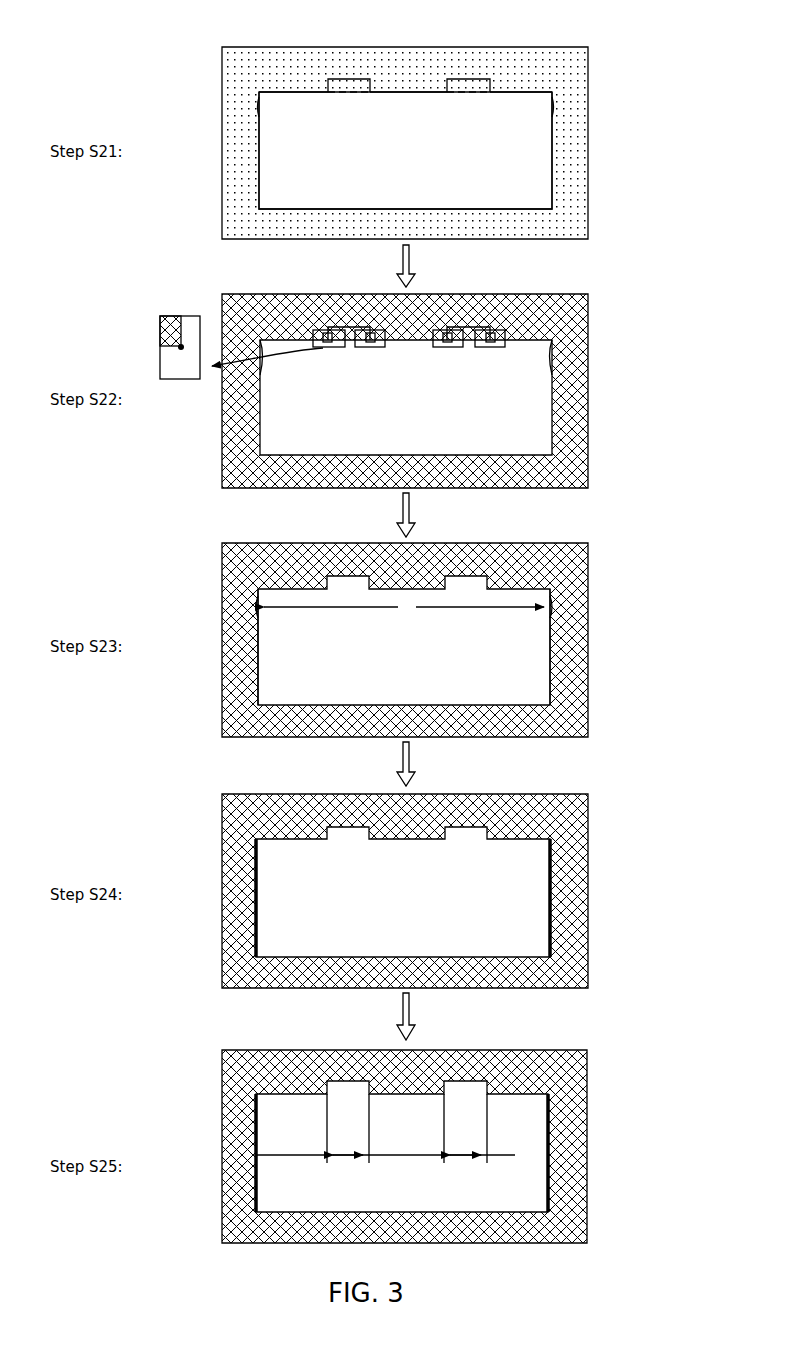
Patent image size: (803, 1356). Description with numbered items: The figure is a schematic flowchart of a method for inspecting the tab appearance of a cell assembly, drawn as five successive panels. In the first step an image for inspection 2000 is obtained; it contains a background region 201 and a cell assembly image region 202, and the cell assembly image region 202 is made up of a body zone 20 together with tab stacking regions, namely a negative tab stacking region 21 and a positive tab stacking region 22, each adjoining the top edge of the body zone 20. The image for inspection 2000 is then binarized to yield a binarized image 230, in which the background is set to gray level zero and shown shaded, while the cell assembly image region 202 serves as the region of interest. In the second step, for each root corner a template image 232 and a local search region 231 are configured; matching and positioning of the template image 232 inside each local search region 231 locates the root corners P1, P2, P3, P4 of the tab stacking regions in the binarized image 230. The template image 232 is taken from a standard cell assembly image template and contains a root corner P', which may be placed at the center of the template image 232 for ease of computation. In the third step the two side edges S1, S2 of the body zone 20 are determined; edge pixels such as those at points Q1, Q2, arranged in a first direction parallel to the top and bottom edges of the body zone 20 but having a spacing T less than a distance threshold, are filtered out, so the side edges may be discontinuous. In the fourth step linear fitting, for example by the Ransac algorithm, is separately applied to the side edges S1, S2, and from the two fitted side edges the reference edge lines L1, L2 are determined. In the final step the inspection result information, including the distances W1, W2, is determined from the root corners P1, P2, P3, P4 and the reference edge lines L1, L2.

The image for inspection 2000 is at (461, 124).
The background region 201 is at (553, 57).
The cell assembly image region 202 is at (289, 92).
The body zone 20 is at (383, 115).
The positive tab stacking region 22 is at (347, 88).
The negative tab stacking region 21 is at (467, 80).
The binarized image 230 is at (427, 704).
The local search region 231 is at (450, 340).
The template image 232 is at (443, 342).
The root corner P1 is at (332, 722).
The root corner P2 is at (376, 722).
The root corner P3 is at (448, 722).
The root corner P4 is at (496, 722).
The root corner in template image P' is at (241, 347).
The spacing T is at (404, 597).
The edge pixel Q1 is at (245, 607).
The edge pixel Q2 is at (564, 607).
The side edge S1 is at (257, 654).
The side edge S2 is at (551, 655).
The reference edge line L1 is at (255, 906).
The reference edge line L2 is at (551, 905).
The distance W1 is at (348, 1128).
The distance W2 is at (465, 1128).